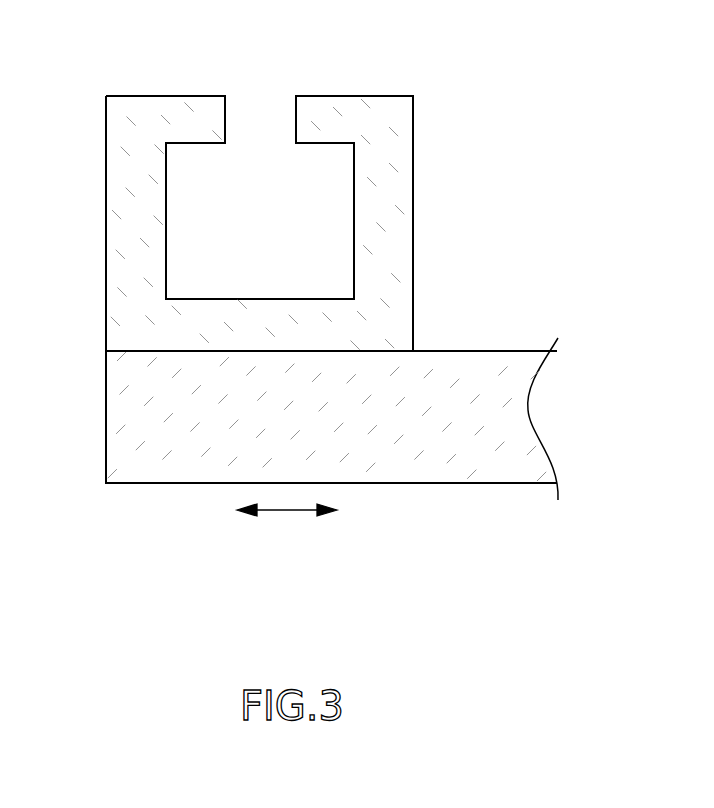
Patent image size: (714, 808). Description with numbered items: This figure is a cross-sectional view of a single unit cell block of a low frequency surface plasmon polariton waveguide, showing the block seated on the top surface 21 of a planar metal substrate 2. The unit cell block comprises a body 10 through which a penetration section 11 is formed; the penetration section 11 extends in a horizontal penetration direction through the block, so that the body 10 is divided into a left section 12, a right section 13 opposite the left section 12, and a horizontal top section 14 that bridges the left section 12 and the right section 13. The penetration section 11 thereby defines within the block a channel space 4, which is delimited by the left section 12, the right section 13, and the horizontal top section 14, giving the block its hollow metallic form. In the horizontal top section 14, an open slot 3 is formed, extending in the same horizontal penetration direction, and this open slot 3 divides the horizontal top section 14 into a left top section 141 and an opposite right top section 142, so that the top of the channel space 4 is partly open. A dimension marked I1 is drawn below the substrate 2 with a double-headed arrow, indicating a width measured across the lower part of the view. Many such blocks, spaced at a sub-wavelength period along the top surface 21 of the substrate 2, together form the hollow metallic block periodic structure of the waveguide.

The planar metal substrate 2 is at (107, 427).
The top surface 21 is at (515, 351).
The body 10 is at (358, 322).
The penetration section 11 is at (165, 262).
The left section 12 is at (118, 221).
The right section 13 is at (400, 221).
The horizontal top section 14 is at (392, 124).
The left top section 141 is at (118, 98).
The right top section 142 is at (370, 108).
The open slot 3 is at (283, 100).
The channel space 4 is at (200, 173).
The width dimension I1 is at (283, 510).